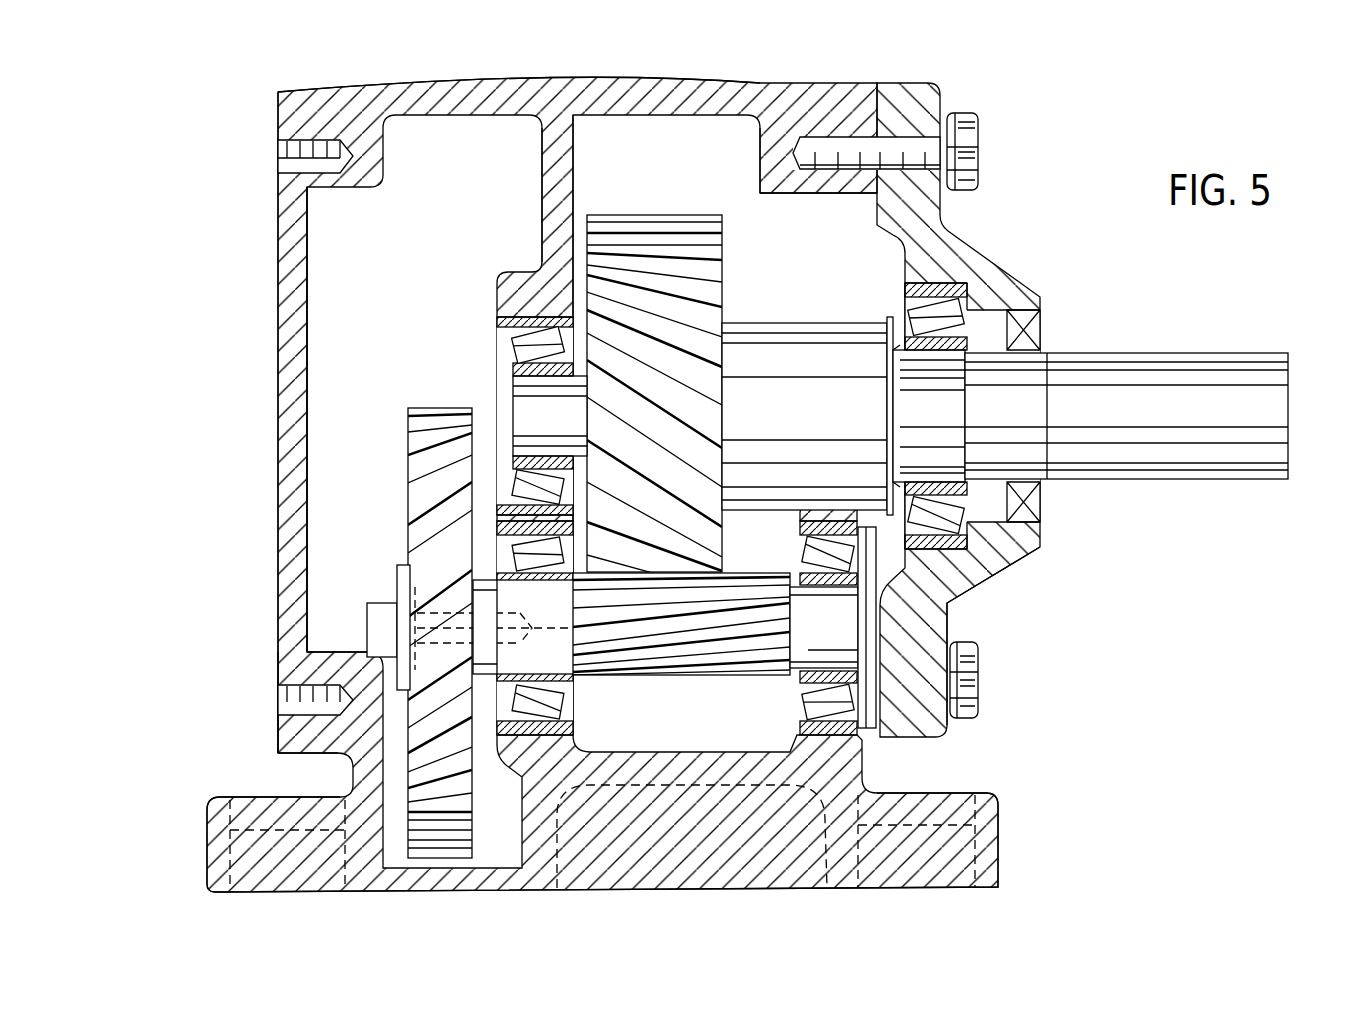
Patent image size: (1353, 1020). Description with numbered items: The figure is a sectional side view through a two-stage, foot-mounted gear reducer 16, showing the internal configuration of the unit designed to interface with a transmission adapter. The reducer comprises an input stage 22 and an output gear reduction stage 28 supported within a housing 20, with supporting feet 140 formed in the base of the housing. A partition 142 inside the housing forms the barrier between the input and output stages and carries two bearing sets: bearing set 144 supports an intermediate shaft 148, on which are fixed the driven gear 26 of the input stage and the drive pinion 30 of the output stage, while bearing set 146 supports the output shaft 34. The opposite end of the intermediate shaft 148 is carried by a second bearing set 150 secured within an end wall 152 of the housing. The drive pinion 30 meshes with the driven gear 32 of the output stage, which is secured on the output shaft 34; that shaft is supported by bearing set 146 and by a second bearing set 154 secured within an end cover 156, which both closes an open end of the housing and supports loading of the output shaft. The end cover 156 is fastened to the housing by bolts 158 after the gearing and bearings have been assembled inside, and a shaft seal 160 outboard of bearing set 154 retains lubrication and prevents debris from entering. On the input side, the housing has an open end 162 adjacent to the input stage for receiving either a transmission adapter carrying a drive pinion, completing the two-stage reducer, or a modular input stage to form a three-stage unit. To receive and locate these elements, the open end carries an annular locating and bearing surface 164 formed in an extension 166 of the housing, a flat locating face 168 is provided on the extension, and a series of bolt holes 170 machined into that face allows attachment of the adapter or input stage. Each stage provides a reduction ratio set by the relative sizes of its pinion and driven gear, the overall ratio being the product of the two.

The two-stage gear reducer 16 is at (667, 68).
The housing 20 is at (770, 83).
The input stage 22 is at (413, 143).
The driven gear 26 is at (437, 412).
The output gear reduction stage 28 is at (678, 122).
The drive pinion 30 is at (738, 680).
The driven gear 32 is at (652, 213).
The output shaft 34 is at (1143, 357).
The supporting feet 140 is at (223, 807).
The partition 142 is at (548, 170).
The bearing set 144 is at (577, 733).
The bearing set 146 is at (520, 325).
The intermediate shaft 148 is at (493, 603).
The second bearing set 150 is at (838, 717).
The end wall 152 is at (872, 737).
The second bearing set 154 is at (940, 288).
The end cover 156 is at (990, 567).
The bolts 158 is at (1010, 657).
The shaft seal 160 is at (1037, 330).
The open end 162 is at (318, 603).
The annular locating and bearing surface 164 is at (285, 480).
The extension 166 is at (298, 670).
The flat locating face 168 is at (280, 702).
The bolt holes 170 is at (320, 707).